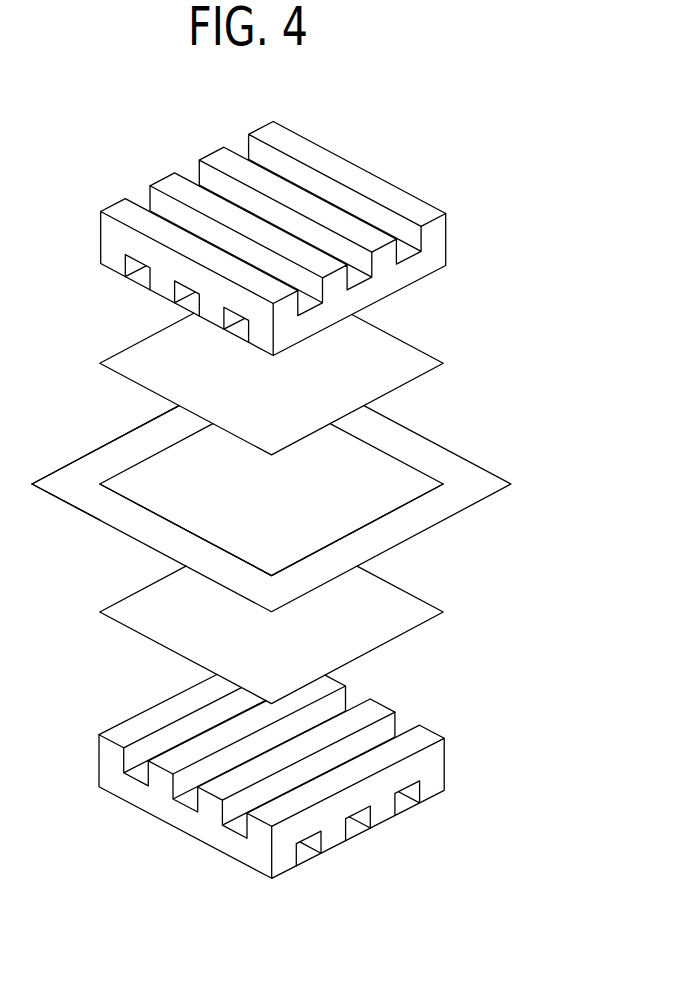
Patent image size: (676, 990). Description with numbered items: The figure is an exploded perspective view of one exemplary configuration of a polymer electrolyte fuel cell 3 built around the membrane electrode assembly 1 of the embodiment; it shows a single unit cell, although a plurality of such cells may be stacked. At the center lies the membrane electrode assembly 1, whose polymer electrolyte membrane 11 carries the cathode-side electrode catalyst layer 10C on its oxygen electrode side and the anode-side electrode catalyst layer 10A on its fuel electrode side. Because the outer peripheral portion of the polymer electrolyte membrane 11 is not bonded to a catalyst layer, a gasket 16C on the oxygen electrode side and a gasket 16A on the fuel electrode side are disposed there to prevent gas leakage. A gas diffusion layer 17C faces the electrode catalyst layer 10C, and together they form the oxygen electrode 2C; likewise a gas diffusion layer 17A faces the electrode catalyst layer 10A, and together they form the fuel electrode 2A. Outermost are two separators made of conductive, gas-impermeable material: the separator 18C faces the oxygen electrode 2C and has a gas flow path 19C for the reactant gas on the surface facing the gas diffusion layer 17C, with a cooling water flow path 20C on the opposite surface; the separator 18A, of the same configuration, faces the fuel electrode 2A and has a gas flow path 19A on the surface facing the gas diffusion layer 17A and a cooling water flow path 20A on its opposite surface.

The polymer electrolyte fuel cell 3 is at (413, 162).
The membrane electrode assembly 1 is at (563, 385).
The polymer electrolyte membrane 11 is at (481, 486).
The electrode catalyst layer 10C is at (403, 473).
The electrode catalyst layer 10A is at (395, 515).
The gasket 16C is at (67, 476).
The gasket 16A is at (65, 497).
The oxygen electrode 2C is at (563, 327).
The fuel electrode 2A is at (563, 530).
The gas diffusion layer 17C is at (417, 365).
The gas diffusion layer 17A is at (413, 617).
The separator 18C is at (434, 235).
The separator 18A is at (432, 758).
The gas flow path 19C is at (138, 280).
The gas flow path 19A is at (175, 794).
The cooling water flow path 20C is at (190, 172).
The cooling water flow path 20A is at (352, 825).